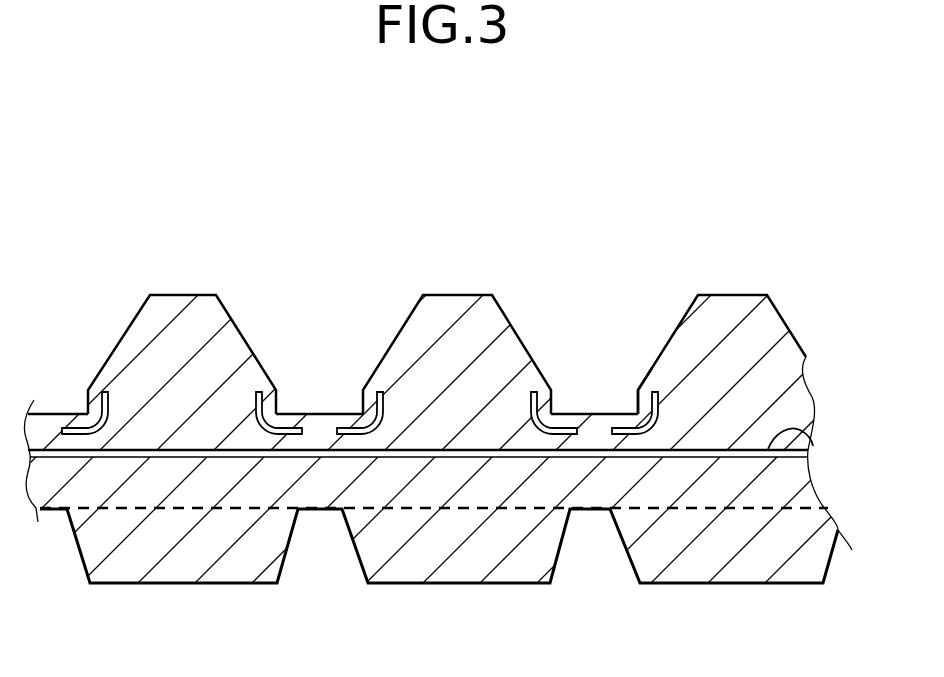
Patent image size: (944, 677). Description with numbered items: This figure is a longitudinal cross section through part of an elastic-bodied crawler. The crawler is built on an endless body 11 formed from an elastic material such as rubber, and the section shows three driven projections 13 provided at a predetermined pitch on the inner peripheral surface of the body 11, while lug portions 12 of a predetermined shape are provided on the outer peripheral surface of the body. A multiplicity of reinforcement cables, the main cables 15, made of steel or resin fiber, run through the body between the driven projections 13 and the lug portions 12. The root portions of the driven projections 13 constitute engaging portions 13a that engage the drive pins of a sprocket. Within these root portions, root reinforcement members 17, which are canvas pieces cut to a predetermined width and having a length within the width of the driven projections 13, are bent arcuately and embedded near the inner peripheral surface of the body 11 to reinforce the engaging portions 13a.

The endless body 11 is at (797, 391).
The lug portions 12 is at (736, 568).
The driven projections 13 is at (460, 300).
The engaging portions 13a is at (636, 404).
The main cables 15 is at (767, 449).
The root reinforcement members 17 is at (362, 412).